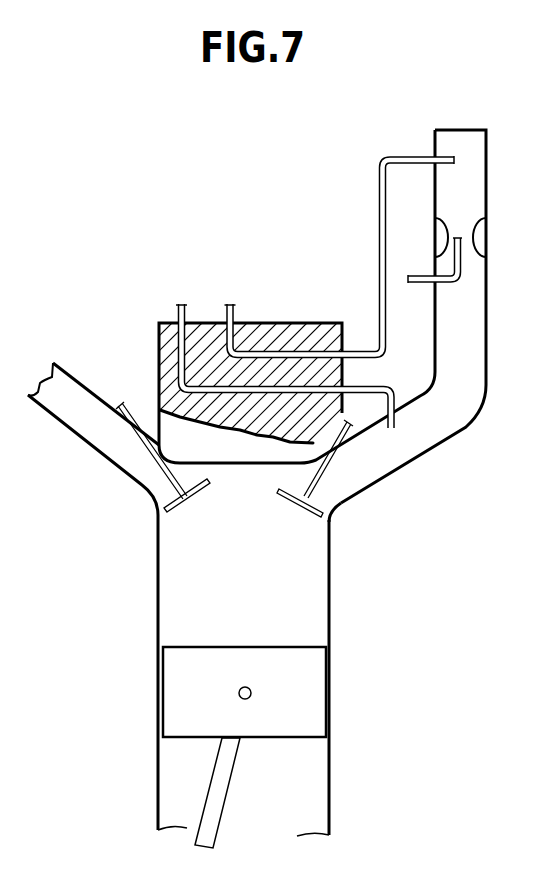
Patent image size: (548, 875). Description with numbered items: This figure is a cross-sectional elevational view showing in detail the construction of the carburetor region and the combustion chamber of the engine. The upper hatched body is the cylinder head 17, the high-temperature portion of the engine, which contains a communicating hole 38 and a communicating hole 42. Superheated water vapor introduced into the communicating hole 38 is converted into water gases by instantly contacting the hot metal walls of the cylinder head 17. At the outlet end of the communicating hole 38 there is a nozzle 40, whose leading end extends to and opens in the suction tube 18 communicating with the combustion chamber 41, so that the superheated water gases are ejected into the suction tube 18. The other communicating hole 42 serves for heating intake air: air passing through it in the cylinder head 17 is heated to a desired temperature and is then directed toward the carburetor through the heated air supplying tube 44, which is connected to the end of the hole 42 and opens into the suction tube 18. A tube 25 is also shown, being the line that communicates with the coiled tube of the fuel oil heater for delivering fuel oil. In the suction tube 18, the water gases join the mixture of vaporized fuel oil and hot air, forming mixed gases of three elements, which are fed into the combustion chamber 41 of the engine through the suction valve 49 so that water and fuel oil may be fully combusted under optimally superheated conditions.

The cylinder head 17 is at (205, 322).
The suction tube 18 is at (467, 425).
The tube 25 is at (408, 278).
The communicating hole 38 is at (177, 370).
The nozzle 40 is at (395, 400).
The combustion chamber 41 is at (329, 620).
The communicating hole 42 is at (270, 350).
The heated air supplying tube 44 is at (446, 160).
The suction valve 49 is at (332, 512).